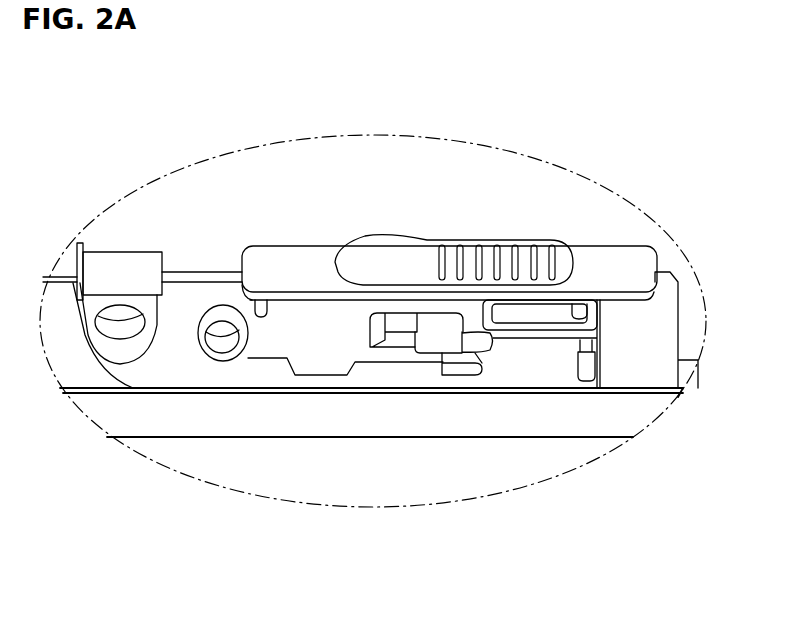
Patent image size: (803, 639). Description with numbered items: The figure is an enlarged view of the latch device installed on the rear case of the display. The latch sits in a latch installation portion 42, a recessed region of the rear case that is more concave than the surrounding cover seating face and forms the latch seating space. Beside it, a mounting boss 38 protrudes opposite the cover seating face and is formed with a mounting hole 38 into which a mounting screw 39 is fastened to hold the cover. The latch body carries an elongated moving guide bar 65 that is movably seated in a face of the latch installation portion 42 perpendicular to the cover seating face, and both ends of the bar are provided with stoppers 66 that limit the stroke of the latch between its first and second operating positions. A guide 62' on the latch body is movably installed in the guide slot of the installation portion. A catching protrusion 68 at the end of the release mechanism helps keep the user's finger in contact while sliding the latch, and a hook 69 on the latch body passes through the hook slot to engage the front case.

The mounting boss 38 is at (120, 345).
The mounting block with hole 39 is at (120, 320).
The latch installation portion 42 is at (320, 363).
The guide 62' is at (475, 452).
The moving guide bar 65 is at (605, 247).
The stopper 66 is at (259, 317).
The catching protrusion 68 is at (388, 258).
The hook 69 is at (433, 347).